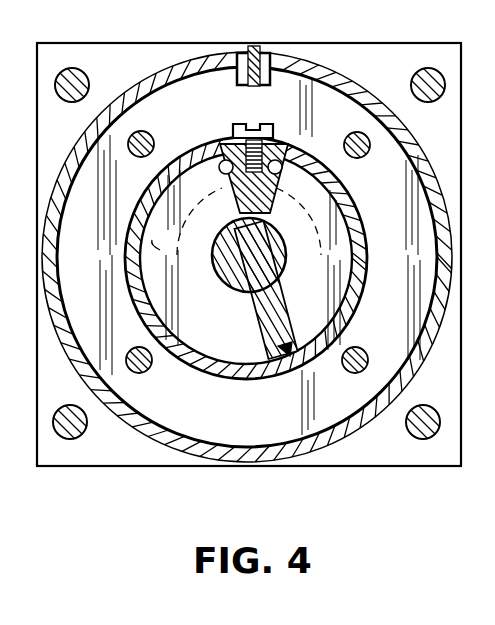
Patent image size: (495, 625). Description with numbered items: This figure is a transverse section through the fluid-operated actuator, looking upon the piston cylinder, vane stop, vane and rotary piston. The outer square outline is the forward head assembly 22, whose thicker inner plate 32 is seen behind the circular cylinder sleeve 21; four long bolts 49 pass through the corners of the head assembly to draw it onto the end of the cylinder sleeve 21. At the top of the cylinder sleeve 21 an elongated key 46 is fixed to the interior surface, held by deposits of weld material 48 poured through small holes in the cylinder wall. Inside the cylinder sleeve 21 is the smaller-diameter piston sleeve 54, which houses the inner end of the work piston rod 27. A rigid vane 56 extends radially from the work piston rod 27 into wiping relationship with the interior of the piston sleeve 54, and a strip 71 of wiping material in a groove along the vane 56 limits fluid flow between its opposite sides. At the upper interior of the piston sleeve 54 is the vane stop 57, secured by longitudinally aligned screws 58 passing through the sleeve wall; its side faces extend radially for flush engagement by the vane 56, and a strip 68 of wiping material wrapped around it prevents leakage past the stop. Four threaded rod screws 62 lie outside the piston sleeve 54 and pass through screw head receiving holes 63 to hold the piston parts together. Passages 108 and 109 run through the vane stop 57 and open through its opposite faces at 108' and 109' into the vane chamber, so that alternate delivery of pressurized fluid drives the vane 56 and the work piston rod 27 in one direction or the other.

The fluid cylinder sleeve 21 is at (338, 428).
The forward head assembly 22 is at (128, 452).
The work piston rod 27 is at (238, 282).
The inner plate 32 is at (240, 428).
The elongated key 46 is at (270, 60).
The weld material 48 is at (256, 50).
The long bolts 49 is at (78, 70).
The piston sleeve 54 is at (358, 205).
The vane 56 is at (284, 318).
The vane stop 57 is at (240, 205).
The screws 58 is at (266, 128).
The threaded rod screws 62 is at (148, 132).
The screw head receiving holes 63 is at (357, 132).
The strip of wiping material 68 is at (268, 208).
The strip of wiping material 71 is at (288, 366).
The passage 108 is at (198, 181).
The passage 109 is at (303, 181).
The passage outlet 108' is at (186, 222).
The passage outlet 109' is at (306, 222).